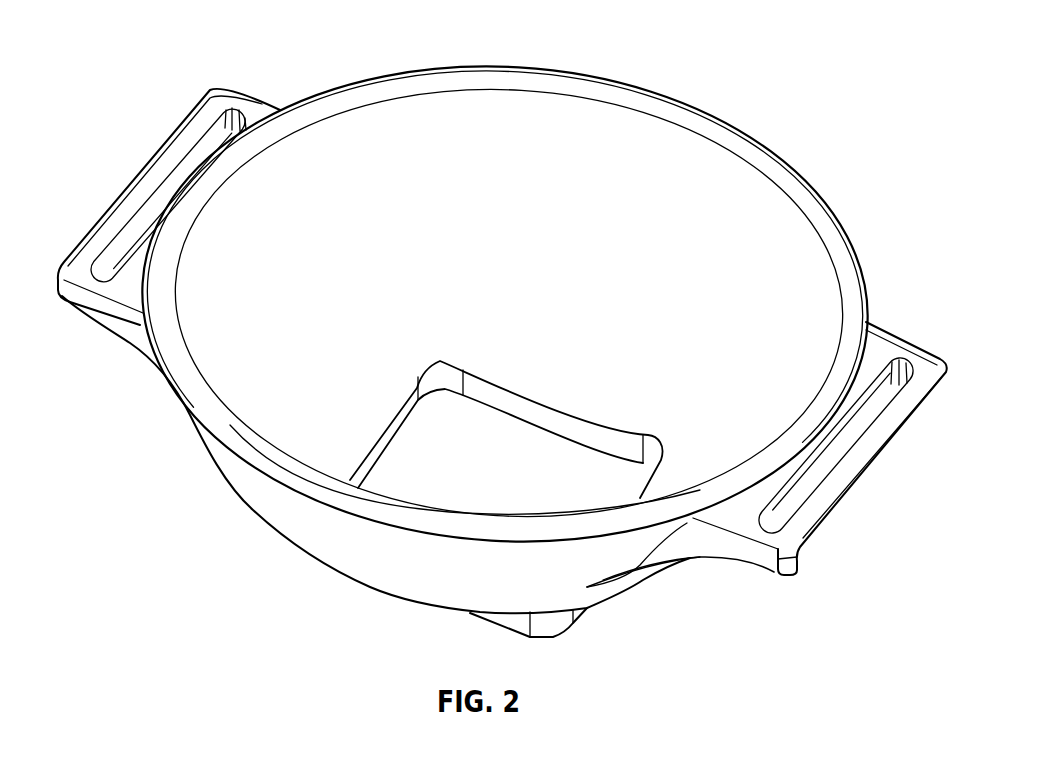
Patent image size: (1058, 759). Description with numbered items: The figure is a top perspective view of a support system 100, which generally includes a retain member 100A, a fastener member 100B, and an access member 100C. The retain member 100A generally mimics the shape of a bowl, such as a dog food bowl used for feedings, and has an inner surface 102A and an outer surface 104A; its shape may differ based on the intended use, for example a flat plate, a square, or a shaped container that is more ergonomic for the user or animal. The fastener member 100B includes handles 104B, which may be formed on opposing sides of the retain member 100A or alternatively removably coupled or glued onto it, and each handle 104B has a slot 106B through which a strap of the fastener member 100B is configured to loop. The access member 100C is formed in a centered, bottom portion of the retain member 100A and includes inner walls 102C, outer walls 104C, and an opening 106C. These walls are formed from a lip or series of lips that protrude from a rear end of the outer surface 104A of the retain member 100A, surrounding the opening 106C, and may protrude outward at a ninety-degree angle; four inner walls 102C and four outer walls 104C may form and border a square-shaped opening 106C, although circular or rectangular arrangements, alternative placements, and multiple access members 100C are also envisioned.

The support system 100 is at (503, 326).
The retain member 100A is at (497, 346).
The fastener member 100B is at (503, 338).
The access member 100C is at (540, 390).
The inner surface 102A is at (685, 196).
The inner walls 102C is at (487, 398).
The outer surface 104A is at (283, 514).
The handles 104B is at (96, 226).
The outer walls 104C is at (586, 612).
The slots 106B is at (125, 272).
The opening 106C is at (546, 462).